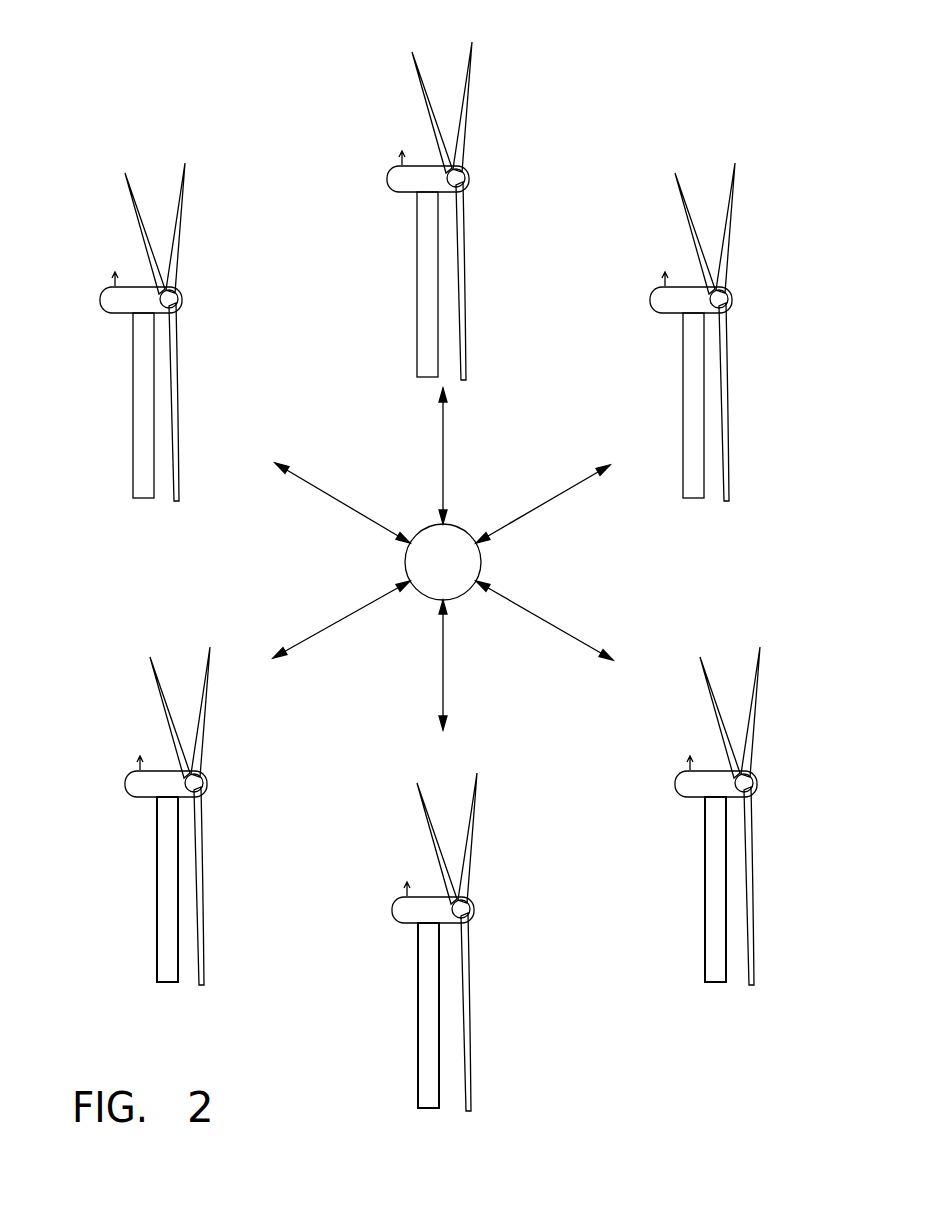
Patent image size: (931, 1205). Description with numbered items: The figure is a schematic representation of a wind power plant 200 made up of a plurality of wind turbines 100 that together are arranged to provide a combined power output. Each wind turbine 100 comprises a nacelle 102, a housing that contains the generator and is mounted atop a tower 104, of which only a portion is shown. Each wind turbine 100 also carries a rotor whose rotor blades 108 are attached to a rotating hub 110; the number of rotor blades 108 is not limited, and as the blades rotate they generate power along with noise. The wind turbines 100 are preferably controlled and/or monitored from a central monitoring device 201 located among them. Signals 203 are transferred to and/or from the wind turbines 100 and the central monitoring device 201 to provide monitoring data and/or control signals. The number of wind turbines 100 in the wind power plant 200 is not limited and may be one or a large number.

The wind power plant 200 is at (193, 67).
The wind turbine 100 is at (112, 272).
The nacelle 102 is at (118, 318).
The tower 104 is at (133, 450).
The rotor blades 108 is at (136, 210).
The rotating hub 110 is at (183, 299).
The central monitoring device 201 is at (463, 574).
The signals 203 is at (443, 460).